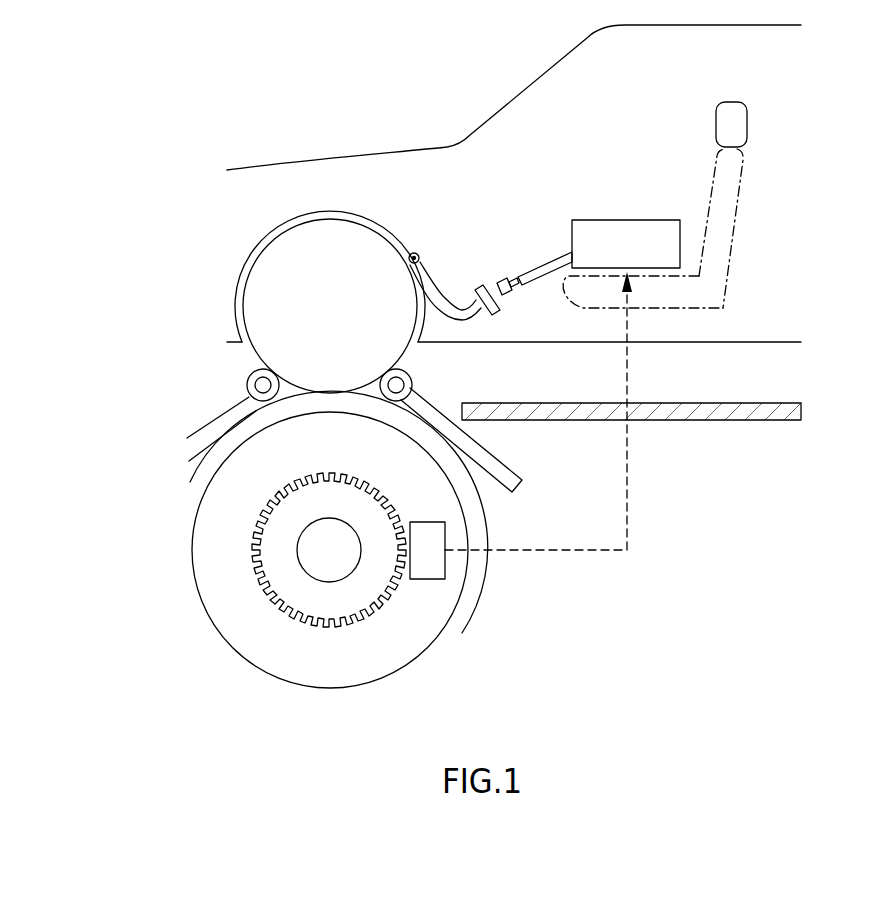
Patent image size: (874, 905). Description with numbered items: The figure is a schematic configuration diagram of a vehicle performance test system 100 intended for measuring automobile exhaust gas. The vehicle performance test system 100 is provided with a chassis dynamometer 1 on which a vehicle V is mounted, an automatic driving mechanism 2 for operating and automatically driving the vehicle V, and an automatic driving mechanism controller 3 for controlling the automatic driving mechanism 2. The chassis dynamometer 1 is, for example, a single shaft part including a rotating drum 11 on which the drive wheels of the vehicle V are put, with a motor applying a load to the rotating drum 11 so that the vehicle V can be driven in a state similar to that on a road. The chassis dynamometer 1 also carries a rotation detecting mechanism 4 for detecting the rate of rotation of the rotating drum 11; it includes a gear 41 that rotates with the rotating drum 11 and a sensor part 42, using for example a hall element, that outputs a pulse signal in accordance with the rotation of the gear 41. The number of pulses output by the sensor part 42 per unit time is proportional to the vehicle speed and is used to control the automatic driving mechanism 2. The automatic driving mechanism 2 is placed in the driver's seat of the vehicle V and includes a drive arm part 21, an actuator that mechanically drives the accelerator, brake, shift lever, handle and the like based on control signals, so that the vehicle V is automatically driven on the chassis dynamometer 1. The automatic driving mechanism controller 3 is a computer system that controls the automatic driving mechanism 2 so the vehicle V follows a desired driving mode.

The vehicle performance test system 100 is at (160, 63).
The vehicle V is at (457, 142).
The chassis dynamometer 1 is at (184, 416).
The rotating drum 11 is at (195, 515).
The automatic driving mechanism 2 is at (478, 222).
The drive arm part 21 is at (540, 263).
The automatic driving mechanism controller 3 is at (627, 218).
The rotation detecting mechanism 4 is at (531, 614).
The gear 41 is at (383, 602).
The sensor part 42 is at (445, 572).